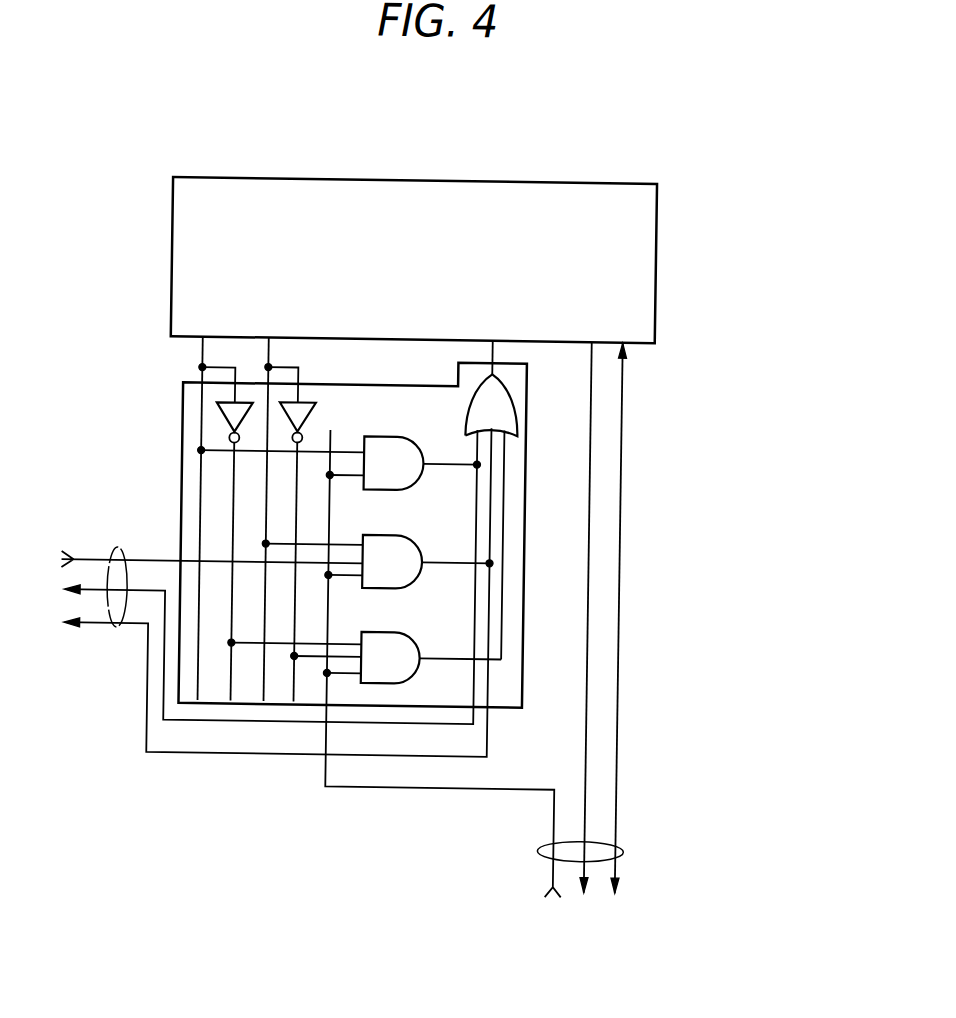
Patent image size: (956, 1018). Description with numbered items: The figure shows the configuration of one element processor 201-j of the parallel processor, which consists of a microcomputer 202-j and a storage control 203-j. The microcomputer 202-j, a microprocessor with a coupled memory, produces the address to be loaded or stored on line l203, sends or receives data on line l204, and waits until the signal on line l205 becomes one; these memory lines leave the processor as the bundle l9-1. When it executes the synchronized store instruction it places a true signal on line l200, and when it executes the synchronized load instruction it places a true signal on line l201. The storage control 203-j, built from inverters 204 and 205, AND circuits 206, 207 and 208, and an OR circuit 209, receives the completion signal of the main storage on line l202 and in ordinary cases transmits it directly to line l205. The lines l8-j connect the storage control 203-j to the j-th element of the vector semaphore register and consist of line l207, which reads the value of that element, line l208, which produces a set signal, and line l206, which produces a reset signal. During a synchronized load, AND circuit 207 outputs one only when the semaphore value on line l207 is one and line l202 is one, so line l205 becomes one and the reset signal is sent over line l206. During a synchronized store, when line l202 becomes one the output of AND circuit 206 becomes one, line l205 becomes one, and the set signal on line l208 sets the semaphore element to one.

The element processor 201-j is at (506, 99).
The microcomputer 202-j is at (402, 180).
The storage control 203-j is at (525, 513).
The inverter 204 is at (220, 418).
The inverter 205 is at (311, 412).
The AND circuit 206 is at (392, 491).
The AND circuit 207 is at (399, 590).
The AND circuit 208 is at (397, 684).
The OR circuit 209 is at (461, 409).
The line l200 is at (197, 353).
The line l201 is at (265, 354).
The line l202 is at (432, 790).
The line l203 is at (586, 754).
The line l204 is at (619, 745).
The line l205 is at (490, 349).
The line l206 is at (231, 757).
The line l207 is at (150, 563).
The line l208 is at (181, 725).
The lines l8-j is at (114, 632).
The lines l9-1 is at (633, 850).